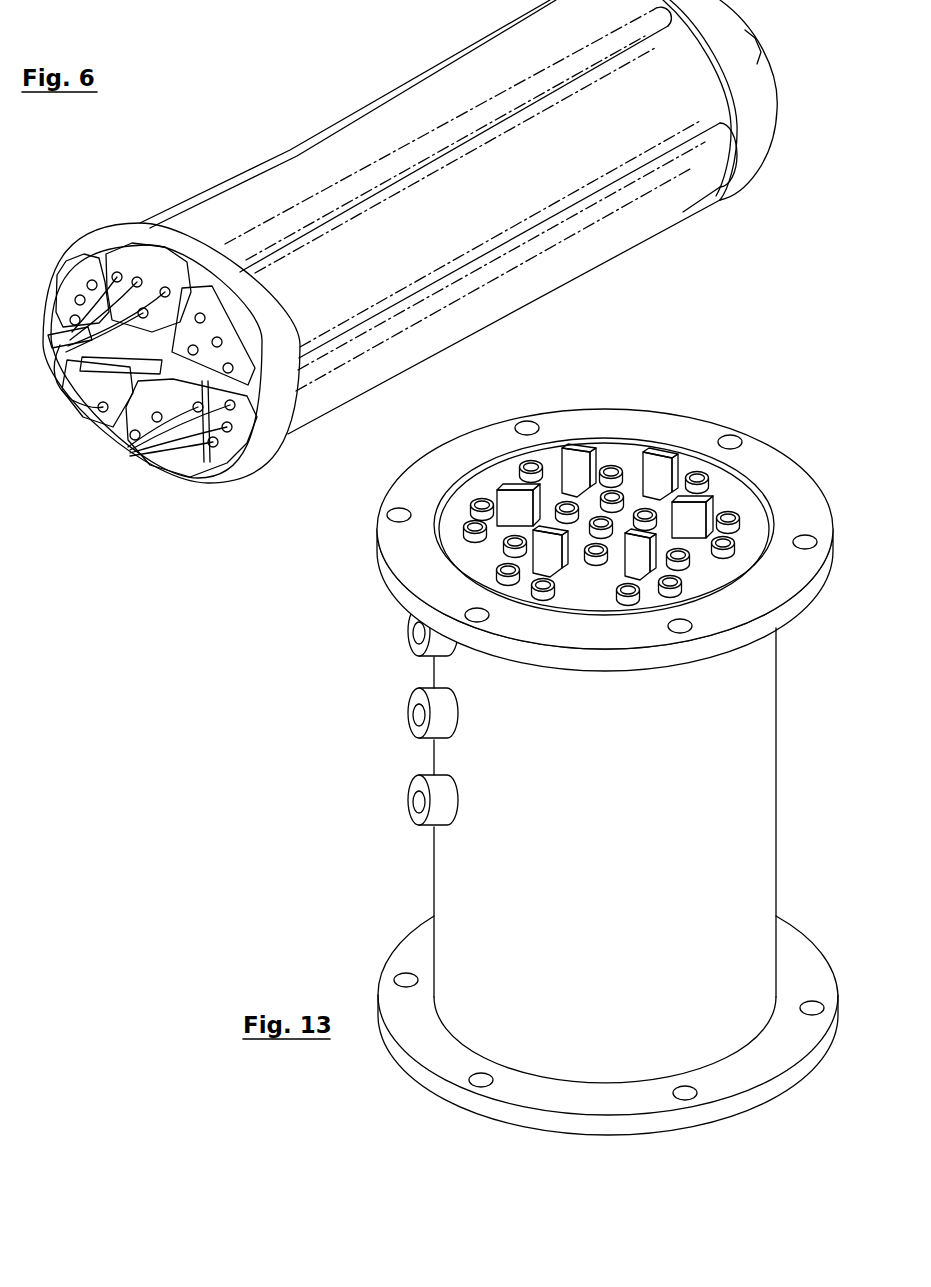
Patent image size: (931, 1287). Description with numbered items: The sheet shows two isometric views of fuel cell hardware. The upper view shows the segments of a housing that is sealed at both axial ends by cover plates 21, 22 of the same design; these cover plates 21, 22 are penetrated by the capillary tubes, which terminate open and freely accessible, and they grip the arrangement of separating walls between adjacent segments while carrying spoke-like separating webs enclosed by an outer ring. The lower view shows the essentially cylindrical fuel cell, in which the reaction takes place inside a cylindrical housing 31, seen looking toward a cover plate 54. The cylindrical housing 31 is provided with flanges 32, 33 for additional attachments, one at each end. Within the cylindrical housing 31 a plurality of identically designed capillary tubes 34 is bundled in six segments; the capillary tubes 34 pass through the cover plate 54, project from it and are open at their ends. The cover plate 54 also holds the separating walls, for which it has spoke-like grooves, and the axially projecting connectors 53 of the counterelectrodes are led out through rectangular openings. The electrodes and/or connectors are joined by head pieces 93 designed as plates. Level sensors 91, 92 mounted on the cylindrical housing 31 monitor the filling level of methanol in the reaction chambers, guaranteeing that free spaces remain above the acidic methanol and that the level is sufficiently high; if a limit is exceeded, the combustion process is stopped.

In FIG. 6, the cover plate 21 is at (752, 145).
In FIG. 6, the cover plate 22 is at (130, 243).
In FIG. 13, the cylindrical housing 31 is at (487, 845).
In FIG. 13, the flange 32 is at (707, 427).
In FIG. 13, the flange 33 is at (415, 1067).
In FIG. 13, the capillary tubes 34 is at (486, 547).
In FIG. 13, the connector 53 is at (578, 450).
In FIG. 13, the cover plate 54 is at (728, 495).
In FIG. 13, the level sensor 91 is at (422, 652).
In FIG. 13, the level sensor 92 is at (420, 740).
In FIG. 13, the head piece 93 is at (420, 826).